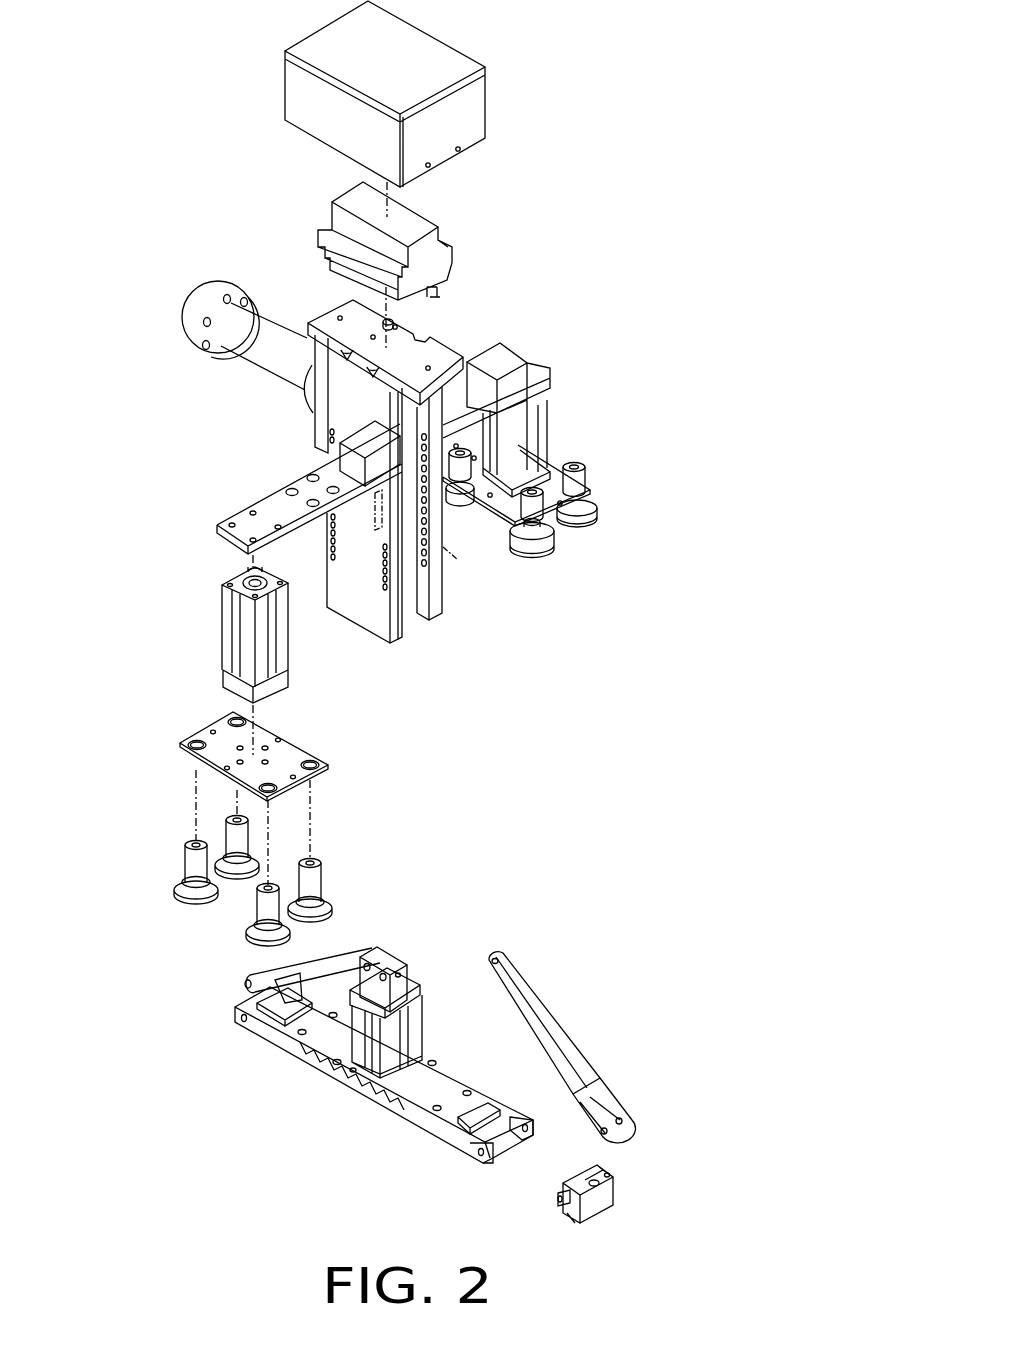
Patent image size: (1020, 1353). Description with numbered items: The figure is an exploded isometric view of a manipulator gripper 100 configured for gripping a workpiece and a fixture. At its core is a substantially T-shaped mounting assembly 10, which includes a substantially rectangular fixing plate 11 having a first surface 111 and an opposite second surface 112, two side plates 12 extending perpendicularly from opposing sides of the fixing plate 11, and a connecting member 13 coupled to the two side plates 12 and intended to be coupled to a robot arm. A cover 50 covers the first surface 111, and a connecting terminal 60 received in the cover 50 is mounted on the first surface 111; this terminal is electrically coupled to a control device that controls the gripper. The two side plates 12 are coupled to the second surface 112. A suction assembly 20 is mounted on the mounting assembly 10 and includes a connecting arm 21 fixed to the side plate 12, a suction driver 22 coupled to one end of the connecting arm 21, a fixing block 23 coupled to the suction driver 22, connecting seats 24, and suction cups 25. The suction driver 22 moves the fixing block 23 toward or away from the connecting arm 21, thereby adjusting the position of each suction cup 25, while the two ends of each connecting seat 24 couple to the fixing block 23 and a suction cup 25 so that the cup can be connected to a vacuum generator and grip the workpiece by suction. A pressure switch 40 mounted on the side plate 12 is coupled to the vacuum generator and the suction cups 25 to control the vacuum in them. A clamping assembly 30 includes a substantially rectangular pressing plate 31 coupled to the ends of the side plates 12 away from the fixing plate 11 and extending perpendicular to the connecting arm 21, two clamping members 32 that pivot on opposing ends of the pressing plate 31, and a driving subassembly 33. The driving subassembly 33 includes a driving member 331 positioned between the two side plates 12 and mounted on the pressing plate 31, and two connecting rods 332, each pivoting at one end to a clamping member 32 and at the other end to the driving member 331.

The manipulator gripper 100 is at (211, 24).
The mounting assembly 10 is at (694, 272).
The fixing plate 11 is at (641, 322).
The first surface 111 is at (433, 358).
The second surface 112 is at (520, 423).
The side plate 12 is at (437, 543).
The connecting member 13 is at (392, 321).
The suction assembly 20 is at (90, 485).
The connecting arm 21 is at (247, 527).
The suction driver 22 is at (227, 608).
The fixing block 23 is at (223, 725).
The connecting seat 24 is at (195, 863).
The suction cup 25 is at (182, 900).
The clamping assembly 30 is at (720, 900).
The pressing plate 31 is at (317, 1027).
The clamping member 32 is at (603, 1200).
The driving subassembly 33 is at (638, 933).
The driving member 331 is at (410, 1023).
The connecting rod 332 is at (553, 1030).
The pressure switch 40 is at (357, 440).
The cover 50 is at (470, 113).
The connecting terminal 60 is at (417, 226).